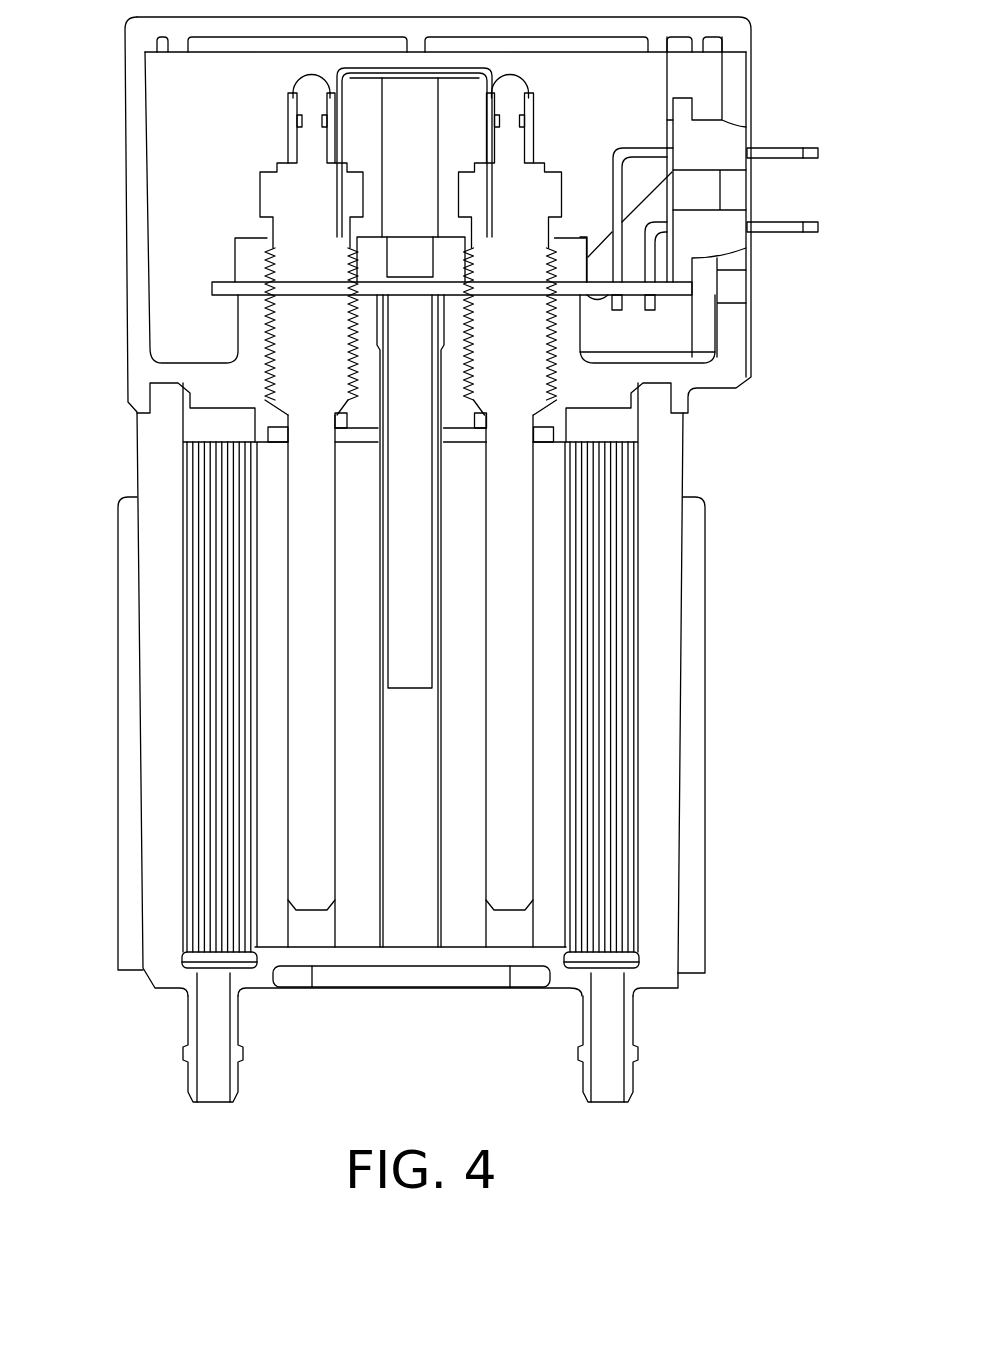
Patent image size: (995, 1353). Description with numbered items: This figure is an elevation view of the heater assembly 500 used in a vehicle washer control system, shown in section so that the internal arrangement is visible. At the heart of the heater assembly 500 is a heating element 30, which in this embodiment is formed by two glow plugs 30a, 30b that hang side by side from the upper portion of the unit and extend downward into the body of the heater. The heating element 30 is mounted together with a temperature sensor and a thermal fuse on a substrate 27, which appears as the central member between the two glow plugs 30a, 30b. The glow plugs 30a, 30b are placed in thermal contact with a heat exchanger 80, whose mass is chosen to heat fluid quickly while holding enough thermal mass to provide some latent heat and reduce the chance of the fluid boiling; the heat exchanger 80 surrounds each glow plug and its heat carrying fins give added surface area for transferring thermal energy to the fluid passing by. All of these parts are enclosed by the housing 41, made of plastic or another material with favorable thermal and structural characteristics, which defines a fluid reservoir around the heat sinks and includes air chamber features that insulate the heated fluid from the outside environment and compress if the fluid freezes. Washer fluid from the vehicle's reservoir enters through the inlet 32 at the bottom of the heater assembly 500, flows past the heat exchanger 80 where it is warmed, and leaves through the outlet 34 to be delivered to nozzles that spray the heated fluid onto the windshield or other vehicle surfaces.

The heater assembly 500 is at (753, 80).
The substrate 27 is at (410, 516).
The heating element 30 is at (558, 440).
The glow plug 30a is at (511, 670).
The glow plug 30b is at (312, 670).
The heat exchanger 80 is at (555, 510).
The housing 41 is at (658, 968).
The inlet 32 is at (215, 1090).
The outlet 34 is at (606, 1088).